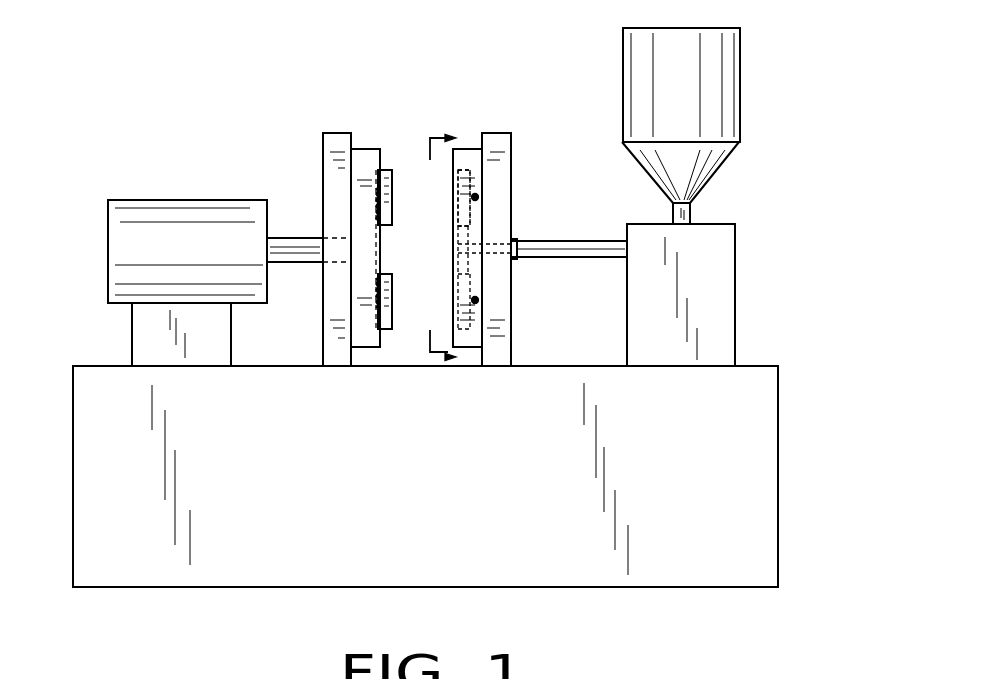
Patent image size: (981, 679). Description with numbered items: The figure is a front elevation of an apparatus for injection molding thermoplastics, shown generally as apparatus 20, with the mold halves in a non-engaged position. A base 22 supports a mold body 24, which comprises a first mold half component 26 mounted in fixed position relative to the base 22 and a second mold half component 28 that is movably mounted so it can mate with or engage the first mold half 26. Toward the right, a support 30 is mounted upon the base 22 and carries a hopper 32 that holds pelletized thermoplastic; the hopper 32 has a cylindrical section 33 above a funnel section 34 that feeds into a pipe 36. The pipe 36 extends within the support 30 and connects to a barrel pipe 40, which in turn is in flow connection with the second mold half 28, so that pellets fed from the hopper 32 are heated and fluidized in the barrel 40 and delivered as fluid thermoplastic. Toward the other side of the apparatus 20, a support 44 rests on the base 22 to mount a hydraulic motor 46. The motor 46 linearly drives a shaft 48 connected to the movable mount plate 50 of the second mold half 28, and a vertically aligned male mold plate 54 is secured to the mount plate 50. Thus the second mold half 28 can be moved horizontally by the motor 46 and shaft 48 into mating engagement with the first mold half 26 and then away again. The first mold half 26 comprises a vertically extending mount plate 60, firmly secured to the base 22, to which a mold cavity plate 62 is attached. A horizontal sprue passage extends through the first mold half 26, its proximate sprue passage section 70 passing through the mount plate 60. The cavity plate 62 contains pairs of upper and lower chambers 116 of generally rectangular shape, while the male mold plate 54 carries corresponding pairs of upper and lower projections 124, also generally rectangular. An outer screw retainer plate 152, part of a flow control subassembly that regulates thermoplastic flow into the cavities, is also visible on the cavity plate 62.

The apparatus for injection molding thermoplastics 20 is at (182, 125).
The base 22 is at (719, 482).
The mold body 24 is at (318, 92).
The first mold half component 26 is at (505, 114).
The second mold half component 28 is at (344, 110).
The support 30 is at (718, 284).
The hopper 32 is at (758, 93).
The cylindrical section 33 is at (634, 63).
The funnel section 34 is at (727, 168).
The pipe 36 is at (692, 212).
The barrel pipe 40 is at (608, 235).
The support 44 is at (152, 333).
The hydraulic motor 46 is at (90, 254).
The shaft 48 is at (300, 238).
The movable mount plate 50 is at (323, 155).
The male mold plate 54 is at (367, 356).
The mount plate 60 is at (497, 352).
The mold cavity plate 62 is at (455, 148).
The proximate sprue passage section 70 is at (497, 240).
The upper and lower chambers 116 is at (464, 193).
The upper and lower projections 124 is at (390, 168).
The outer screw retainer plate 152 is at (478, 300).